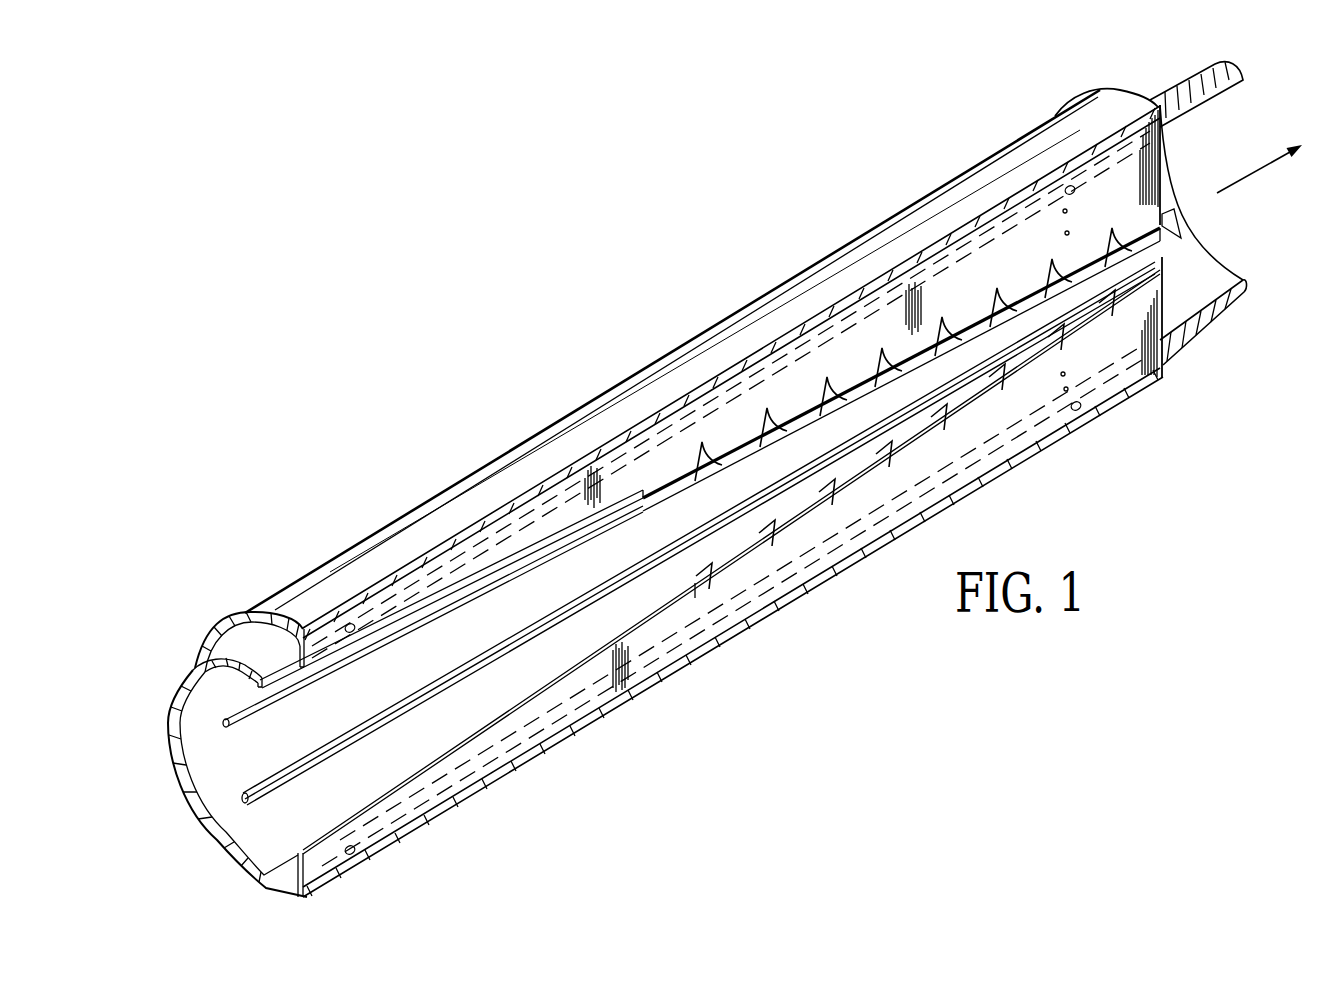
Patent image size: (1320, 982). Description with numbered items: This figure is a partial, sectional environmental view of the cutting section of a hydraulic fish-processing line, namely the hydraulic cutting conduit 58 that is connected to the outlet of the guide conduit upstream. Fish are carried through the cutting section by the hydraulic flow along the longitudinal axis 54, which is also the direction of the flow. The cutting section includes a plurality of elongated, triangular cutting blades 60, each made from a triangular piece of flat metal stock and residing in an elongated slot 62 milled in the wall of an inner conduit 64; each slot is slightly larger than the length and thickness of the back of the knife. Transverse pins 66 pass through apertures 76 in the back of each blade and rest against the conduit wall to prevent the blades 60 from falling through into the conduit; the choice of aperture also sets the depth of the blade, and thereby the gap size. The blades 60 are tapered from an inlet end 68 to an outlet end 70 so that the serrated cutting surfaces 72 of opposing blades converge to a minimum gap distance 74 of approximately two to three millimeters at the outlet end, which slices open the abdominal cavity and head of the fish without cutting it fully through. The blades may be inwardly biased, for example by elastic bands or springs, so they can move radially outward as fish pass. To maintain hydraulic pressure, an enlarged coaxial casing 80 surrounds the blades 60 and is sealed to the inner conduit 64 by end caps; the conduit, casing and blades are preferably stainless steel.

The longitudinal axis 54 is at (1263, 162).
The hydraulic cutting conduit 58 is at (802, 220).
The cutting blades 60 is at (1031, 263).
The elongated slots 62 is at (470, 665).
The inner conduit 64 is at (1190, 70).
The transverse pins 66 is at (1080, 190).
The inlet end 68 is at (228, 727).
The outlet end 70 is at (1165, 192).
The serrated cutting surfaces 72 is at (1160, 280).
The minimum gap distance 74 is at (1183, 215).
The apertures 76 is at (1060, 374).
The coaxial casing 80 is at (393, 523).